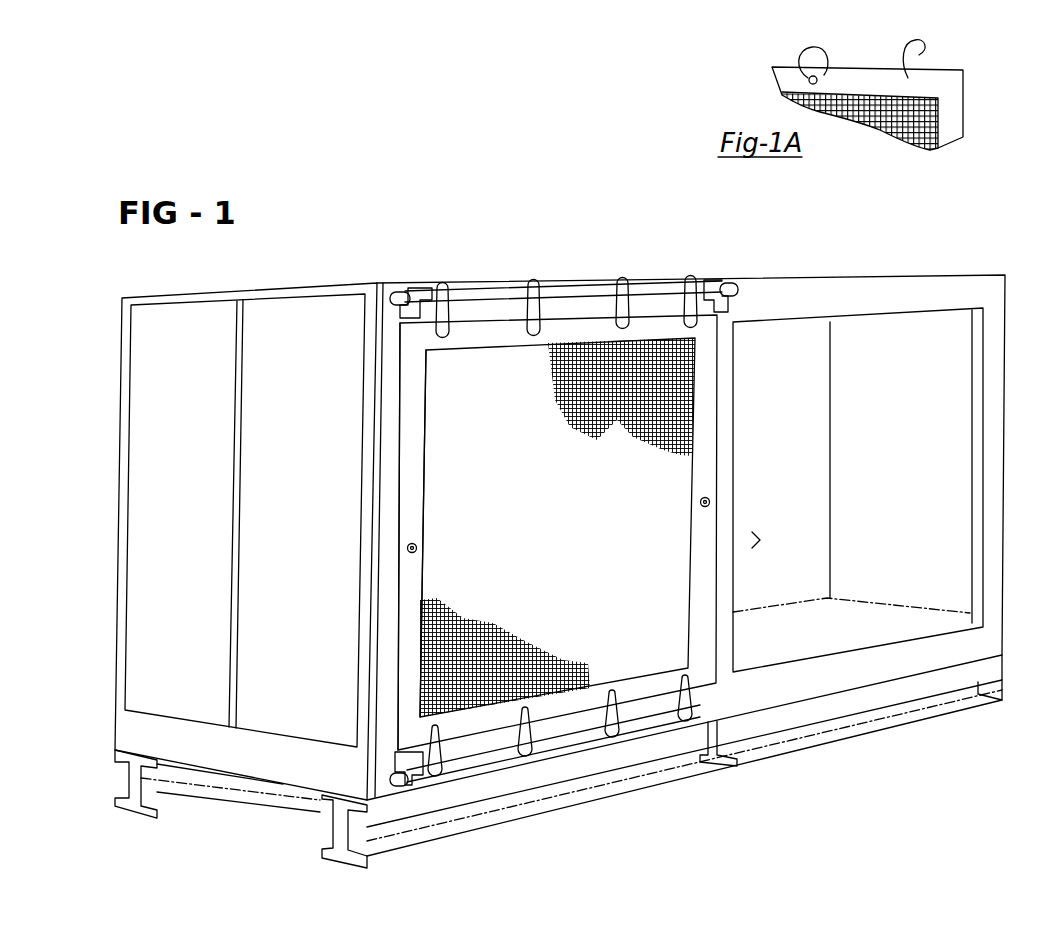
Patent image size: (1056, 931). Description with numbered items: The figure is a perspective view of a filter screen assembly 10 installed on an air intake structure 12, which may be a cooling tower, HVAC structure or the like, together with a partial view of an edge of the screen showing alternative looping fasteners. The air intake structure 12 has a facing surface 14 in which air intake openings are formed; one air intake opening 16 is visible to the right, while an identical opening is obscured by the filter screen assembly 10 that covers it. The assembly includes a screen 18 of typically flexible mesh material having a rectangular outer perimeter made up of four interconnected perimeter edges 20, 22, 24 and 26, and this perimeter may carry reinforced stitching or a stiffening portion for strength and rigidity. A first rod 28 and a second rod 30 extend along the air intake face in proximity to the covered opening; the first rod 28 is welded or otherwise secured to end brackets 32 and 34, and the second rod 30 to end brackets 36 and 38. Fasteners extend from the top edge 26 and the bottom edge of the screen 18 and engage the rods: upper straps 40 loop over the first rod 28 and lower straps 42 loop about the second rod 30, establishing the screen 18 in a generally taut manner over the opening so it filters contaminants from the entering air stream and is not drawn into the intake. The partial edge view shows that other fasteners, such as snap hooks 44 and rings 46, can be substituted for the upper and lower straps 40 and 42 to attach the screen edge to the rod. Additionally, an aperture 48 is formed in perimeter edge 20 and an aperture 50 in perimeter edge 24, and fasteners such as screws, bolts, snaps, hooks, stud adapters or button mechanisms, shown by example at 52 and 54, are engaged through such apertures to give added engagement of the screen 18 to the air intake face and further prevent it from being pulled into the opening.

In FIG. 1, the filter screen assembly 10 is at (599, 254).
In FIG. 1, the air intake structure 12 is at (327, 283).
In FIG. 1, the facing surface 14 is at (750, 297).
In FIG. 1, the air intake opening 16 is at (890, 466).
In FIG. 1, the screen 18 is at (533, 498).
In FIG. 1A, the screen 18 is at (903, 130).
In FIG. 1, the perimeter edge 20 is at (705, 448).
In FIG. 1A, the perimeter edge 20 is at (963, 120).
In FIG. 1, the perimeter edge 22 is at (568, 703).
In FIG. 1, the perimeter edge 24 is at (403, 582).
In FIG. 1, the top edge 26 is at (485, 325).
In FIG. 1A, the top edge 26 is at (853, 88).
In FIG. 1, the first rod 28 is at (525, 290).
In FIG. 1, the second rod 30 is at (480, 760).
In FIG. 1, the end bracket 32 is at (411, 286).
In FIG. 1, the end bracket 34 is at (722, 281).
In FIG. 1, the end bracket 36 is at (420, 788).
In FIG. 1, the end bracket 38 is at (710, 727).
In FIG. 1, the upper straps 40 is at (622, 276).
In FIG. 1, the lower straps 42 is at (618, 723).
In FIG. 1A, the snap hooks 44 is at (925, 50).
In FIG. 1A, the rings 46 is at (800, 50).
In FIG. 1, the aperture 48 is at (712, 500).
In FIG. 1, the aperture 50 is at (407, 548).
In FIG. 1, the fastener 52 is at (756, 540).
In FIG. 1, the fastener 54 is at (453, 577).